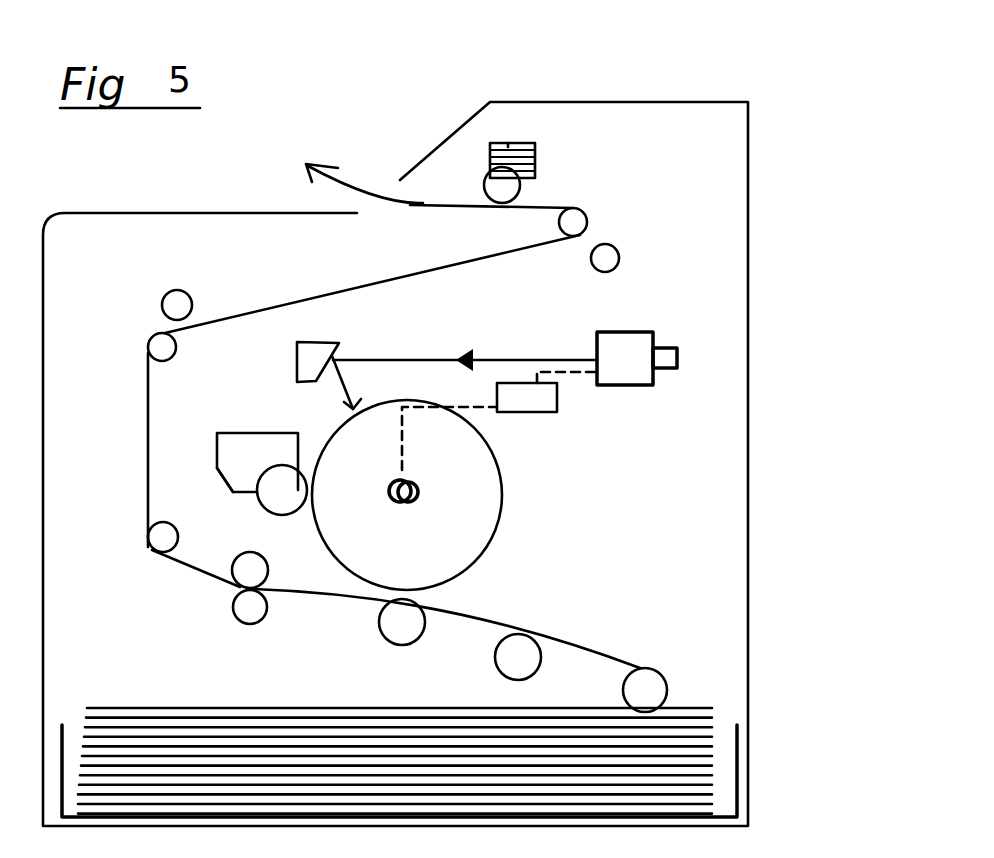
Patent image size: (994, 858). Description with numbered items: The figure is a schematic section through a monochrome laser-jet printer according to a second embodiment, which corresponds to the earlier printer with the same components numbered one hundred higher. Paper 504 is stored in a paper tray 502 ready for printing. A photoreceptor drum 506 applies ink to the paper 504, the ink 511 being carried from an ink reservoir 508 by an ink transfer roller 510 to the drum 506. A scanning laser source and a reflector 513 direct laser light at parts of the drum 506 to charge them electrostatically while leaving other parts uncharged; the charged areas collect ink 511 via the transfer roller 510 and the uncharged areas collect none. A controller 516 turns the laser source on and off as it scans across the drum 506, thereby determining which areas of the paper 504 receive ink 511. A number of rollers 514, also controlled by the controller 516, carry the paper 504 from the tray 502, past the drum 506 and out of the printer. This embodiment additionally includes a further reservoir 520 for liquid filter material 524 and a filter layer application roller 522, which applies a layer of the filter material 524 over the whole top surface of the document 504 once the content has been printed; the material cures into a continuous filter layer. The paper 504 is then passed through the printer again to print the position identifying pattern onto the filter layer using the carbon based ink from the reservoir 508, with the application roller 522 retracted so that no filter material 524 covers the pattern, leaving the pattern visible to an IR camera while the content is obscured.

The paper tray 502 is at (743, 755).
The paper 504 is at (693, 708).
The photoreceptor drum 506 is at (503, 507).
The ink reservoir 508 is at (215, 447).
The ink transfer roller 510 is at (278, 517).
The ink 511 is at (232, 470).
The reflector 513 is at (333, 342).
The rollers 514 is at (590, 222).
The controller 516 is at (558, 398).
The further reservoir 520 is at (535, 157).
The filter layer application roller 522 is at (483, 184).
The filter material 524 is at (508, 147).